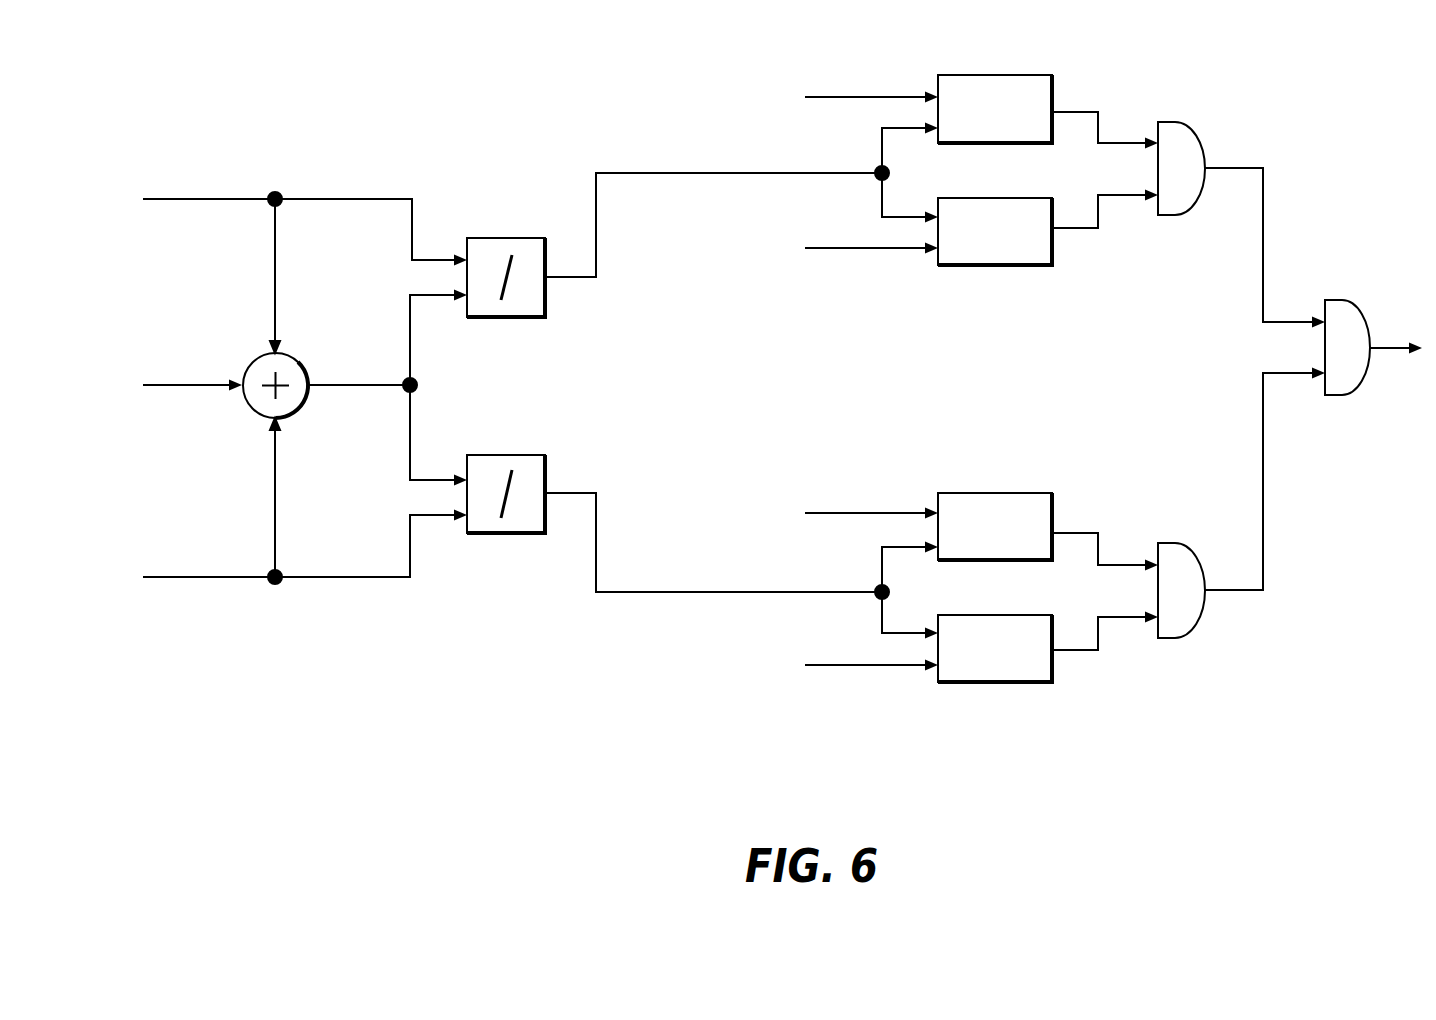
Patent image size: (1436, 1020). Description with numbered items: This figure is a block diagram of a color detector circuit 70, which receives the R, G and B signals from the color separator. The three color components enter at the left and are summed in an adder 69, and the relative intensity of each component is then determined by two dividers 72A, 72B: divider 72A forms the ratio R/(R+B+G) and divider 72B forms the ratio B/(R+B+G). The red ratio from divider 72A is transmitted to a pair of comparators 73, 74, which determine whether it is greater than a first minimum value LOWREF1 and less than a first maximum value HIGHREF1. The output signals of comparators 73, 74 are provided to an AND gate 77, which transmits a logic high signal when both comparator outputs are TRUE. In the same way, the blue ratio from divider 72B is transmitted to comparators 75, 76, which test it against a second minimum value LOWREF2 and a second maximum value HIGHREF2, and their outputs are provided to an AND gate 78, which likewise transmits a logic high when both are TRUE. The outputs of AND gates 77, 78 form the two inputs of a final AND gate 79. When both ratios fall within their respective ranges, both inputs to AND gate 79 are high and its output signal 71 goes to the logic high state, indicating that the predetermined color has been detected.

The adder 69 is at (295, 360).
The color detector circuit 70 is at (1384, 529).
The output signal 71 is at (1375, 350).
The divider 72A is at (518, 238).
The divider 72B is at (495, 533).
The comparator 73 is at (963, 75).
The comparator 74 is at (995, 265).
The comparator 75 is at (995, 493).
The comparator 76 is at (1000, 682).
The AND gate 77 is at (1188, 122).
The AND gate 78 is at (1203, 608).
The AND gate 79 is at (1338, 300).